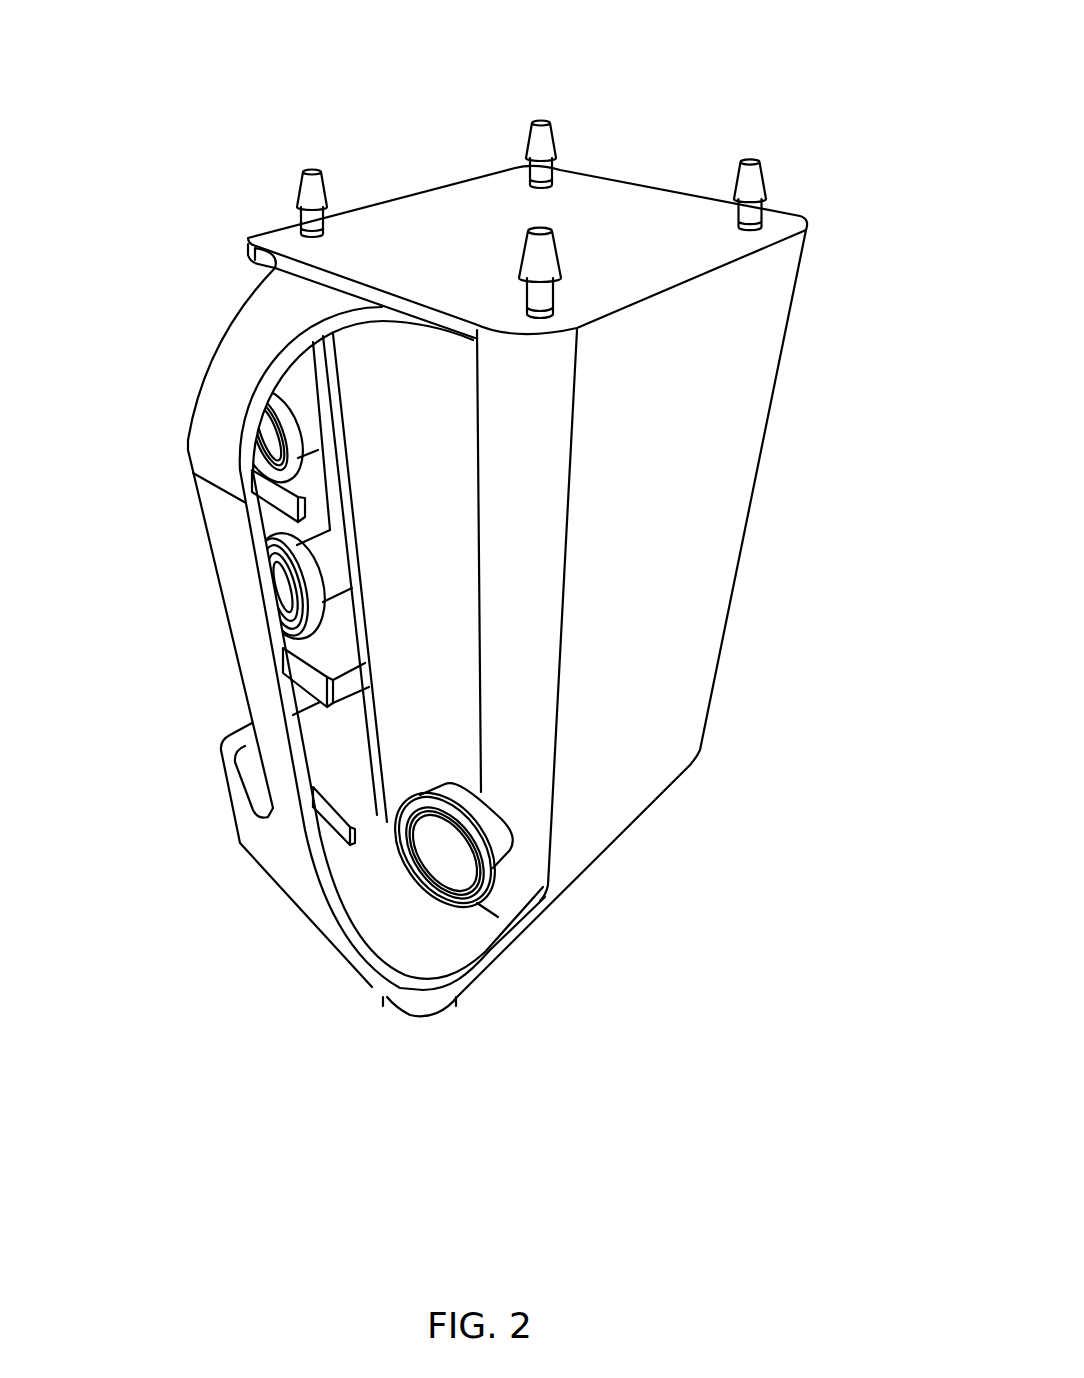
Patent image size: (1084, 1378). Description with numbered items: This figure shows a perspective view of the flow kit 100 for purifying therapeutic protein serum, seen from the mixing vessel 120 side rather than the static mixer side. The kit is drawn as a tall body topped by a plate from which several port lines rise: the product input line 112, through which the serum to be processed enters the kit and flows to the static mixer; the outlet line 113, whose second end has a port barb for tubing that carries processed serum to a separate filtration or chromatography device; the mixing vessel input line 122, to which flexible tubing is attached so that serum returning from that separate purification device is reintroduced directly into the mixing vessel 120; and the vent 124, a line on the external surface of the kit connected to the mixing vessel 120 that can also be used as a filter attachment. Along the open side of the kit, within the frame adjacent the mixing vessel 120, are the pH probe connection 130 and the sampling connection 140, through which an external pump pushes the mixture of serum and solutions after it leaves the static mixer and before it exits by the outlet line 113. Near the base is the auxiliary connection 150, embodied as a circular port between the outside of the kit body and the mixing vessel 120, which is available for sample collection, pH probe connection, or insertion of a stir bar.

The flow kit 100 is at (833, 652).
The product input line 112 is at (541, 121).
The outlet line 113 is at (310, 170).
The mixing vessel 120 is at (741, 378).
The mixing vessel input line 122 is at (555, 246).
The vent 124 is at (755, 162).
The pH probe connection 130 is at (267, 443).
The sampling connection 140 is at (277, 590).
The auxiliary connection 150 is at (440, 858).